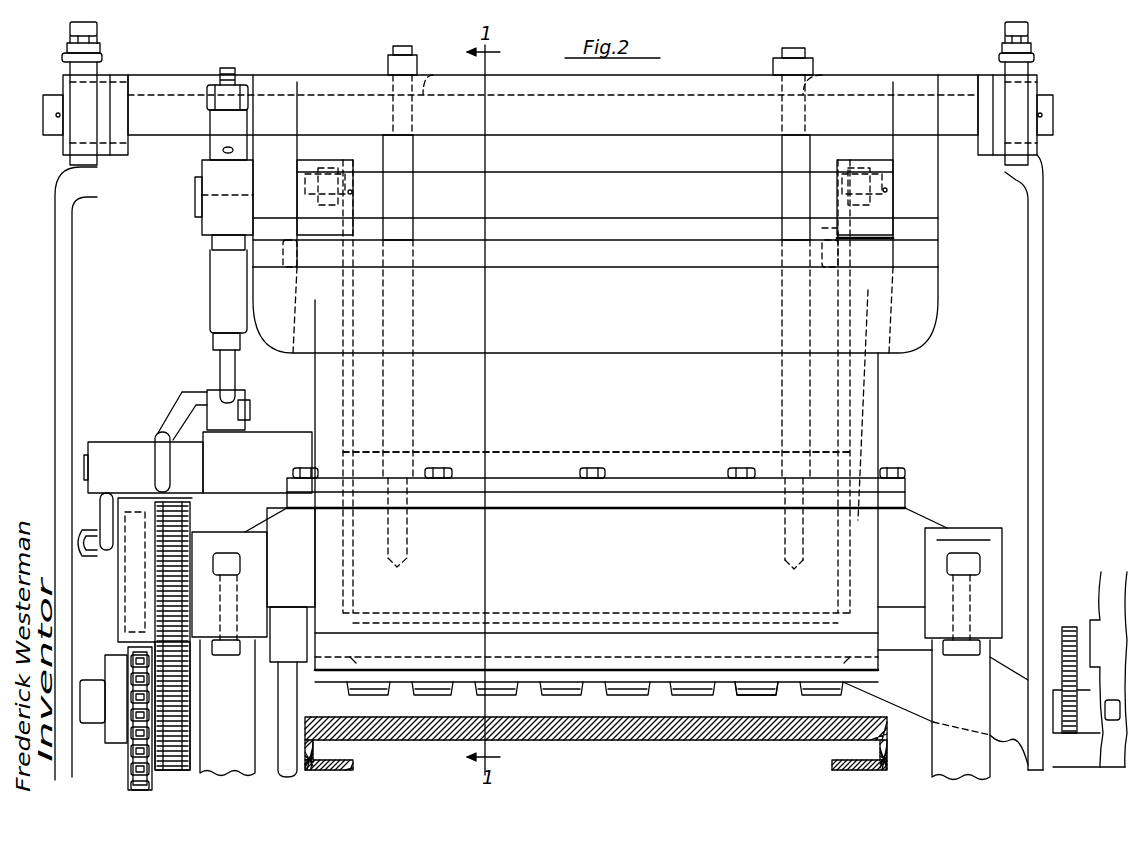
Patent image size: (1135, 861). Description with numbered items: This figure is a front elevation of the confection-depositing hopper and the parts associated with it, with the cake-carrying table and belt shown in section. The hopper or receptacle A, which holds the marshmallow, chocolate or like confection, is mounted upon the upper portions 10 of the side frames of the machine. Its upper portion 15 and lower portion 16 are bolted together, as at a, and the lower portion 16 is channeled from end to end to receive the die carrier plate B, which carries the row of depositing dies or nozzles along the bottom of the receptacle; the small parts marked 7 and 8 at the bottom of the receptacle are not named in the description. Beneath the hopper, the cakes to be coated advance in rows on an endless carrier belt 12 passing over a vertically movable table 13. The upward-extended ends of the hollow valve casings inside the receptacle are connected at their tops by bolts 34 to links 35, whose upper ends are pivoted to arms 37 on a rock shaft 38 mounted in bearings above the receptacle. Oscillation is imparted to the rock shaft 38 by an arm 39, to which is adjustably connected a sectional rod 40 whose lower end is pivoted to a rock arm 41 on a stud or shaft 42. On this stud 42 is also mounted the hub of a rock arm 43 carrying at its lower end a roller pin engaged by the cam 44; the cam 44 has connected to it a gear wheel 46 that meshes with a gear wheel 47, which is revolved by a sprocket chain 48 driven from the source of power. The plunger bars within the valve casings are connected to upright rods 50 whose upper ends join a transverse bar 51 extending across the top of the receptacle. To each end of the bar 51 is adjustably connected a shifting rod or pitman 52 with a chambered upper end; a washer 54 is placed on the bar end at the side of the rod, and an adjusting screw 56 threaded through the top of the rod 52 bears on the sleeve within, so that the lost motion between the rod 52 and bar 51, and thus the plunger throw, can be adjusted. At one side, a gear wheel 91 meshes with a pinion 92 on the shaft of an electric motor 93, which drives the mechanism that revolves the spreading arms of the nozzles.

The teeth 7 is at (392, 684).
The hook 8 is at (596, 650).
The upper portions of the side frames 10 is at (597, 654).
The endless carrier belt 12 is at (673, 718).
The vertically movable table 13 is at (716, 718).
The upper portion of the receptacle 15 is at (860, 405).
The lower portion of the receptacle 16 is at (596, 415).
The bolts 34 is at (366, 255).
The links 35 is at (821, 229).
The arms 37 is at (350, 159).
The rock shaft 38 is at (595, 171).
The arm 39 is at (216, 143).
The sectional rod 40 is at (231, 71).
The rock arm 41 is at (168, 422).
The stud or shaft 42 is at (88, 465).
The rock arm 43 is at (100, 512).
The cam 44 is at (128, 593).
The gear wheel 46 is at (160, 607).
The gear wheel 47 is at (180, 692).
The sprocket chain 48 is at (128, 788).
The upright rods 50 is at (408, 158).
The transverse bar 51 is at (709, 84).
The shifting rod or pitman 52 is at (102, 57).
The washer 54 is at (103, 150).
The adjusting screw 56 is at (97, 30).
The gear wheel 91 is at (1072, 735).
The pinion 92 is at (1070, 628).
The electric motor 93 is at (1090, 669).
The hopper or receptacle A is at (596, 487).
The die carrier plate B is at (781, 685).
The bolts a is at (740, 468).